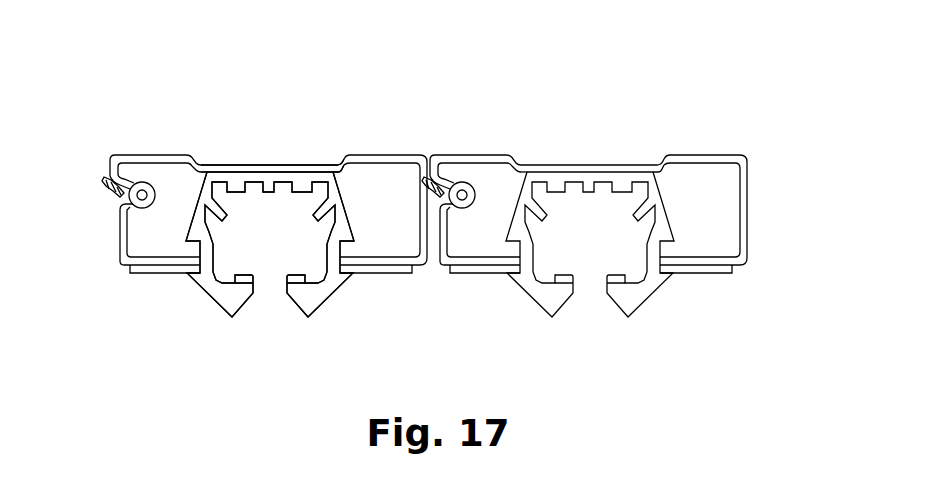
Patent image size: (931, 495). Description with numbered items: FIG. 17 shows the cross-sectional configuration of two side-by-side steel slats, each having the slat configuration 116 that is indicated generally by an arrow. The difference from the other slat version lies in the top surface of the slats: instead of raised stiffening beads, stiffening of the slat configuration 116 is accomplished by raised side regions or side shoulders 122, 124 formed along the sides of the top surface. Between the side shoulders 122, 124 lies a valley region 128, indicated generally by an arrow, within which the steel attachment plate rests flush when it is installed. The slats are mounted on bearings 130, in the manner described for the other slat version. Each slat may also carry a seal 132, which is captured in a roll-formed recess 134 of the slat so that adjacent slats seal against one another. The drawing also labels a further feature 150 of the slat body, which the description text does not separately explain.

The slat configuration 116 is at (289, 148).
The raised side region 122 is at (143, 155).
The raised side region 124 is at (390, 157).
The valley region 128 is at (226, 148).
The bearing 130 is at (558, 178).
The seal 132 is at (454, 195).
The roll-formed recess 134 is at (141, 200).
The T-slot cavity 150 is at (308, 173).